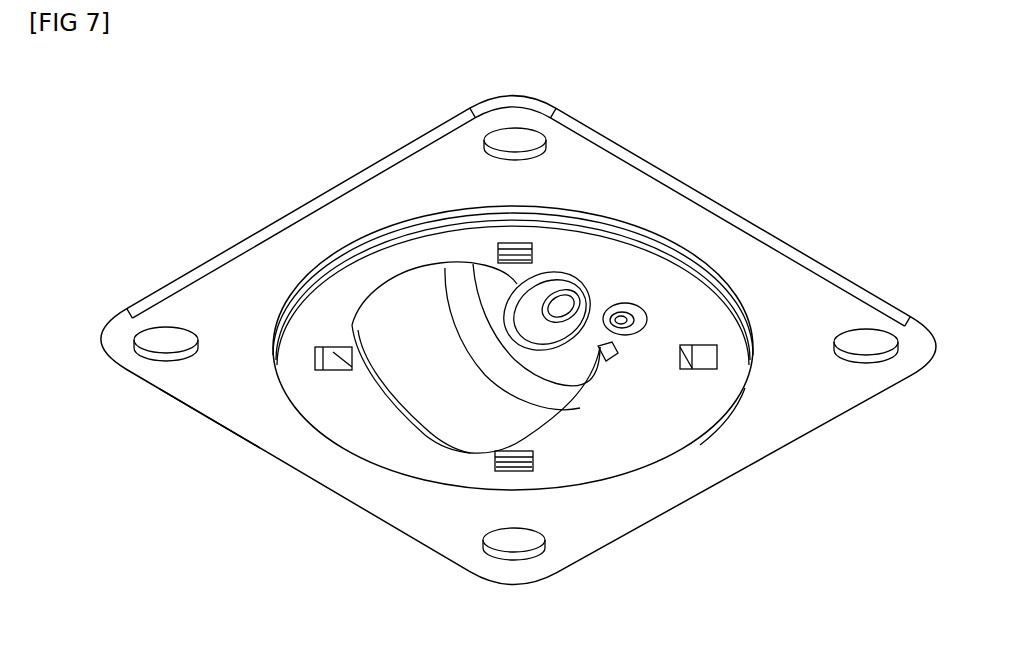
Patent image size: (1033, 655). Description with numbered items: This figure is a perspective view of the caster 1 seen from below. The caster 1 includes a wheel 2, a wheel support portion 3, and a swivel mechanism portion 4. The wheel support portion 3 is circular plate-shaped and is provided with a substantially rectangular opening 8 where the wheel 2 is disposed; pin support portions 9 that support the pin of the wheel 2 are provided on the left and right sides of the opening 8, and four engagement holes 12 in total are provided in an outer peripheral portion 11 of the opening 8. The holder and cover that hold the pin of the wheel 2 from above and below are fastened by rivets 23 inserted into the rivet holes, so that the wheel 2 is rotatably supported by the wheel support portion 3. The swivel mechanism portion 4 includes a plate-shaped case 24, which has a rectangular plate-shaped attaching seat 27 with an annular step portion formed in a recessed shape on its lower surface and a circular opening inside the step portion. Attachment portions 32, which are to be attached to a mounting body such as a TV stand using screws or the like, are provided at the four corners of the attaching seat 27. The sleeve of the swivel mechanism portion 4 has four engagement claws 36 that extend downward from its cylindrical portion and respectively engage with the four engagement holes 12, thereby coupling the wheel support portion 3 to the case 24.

The caster 1 is at (652, 106).
The wheel 2 is at (427, 416).
The wheel support portion 3 is at (756, 325).
The swivel mechanism portion 4 is at (299, 197).
The opening 8 is at (607, 358).
The pin support portion 9 is at (508, 293).
The outer peripheral portion 11 is at (735, 392).
The engagement hole 12 is at (327, 370).
The rivet 23 is at (640, 306).
The case 24 is at (211, 390).
The attaching seat 27 is at (194, 270).
The attachment portion 32 is at (487, 140).
The engagement claw 36 is at (503, 243).